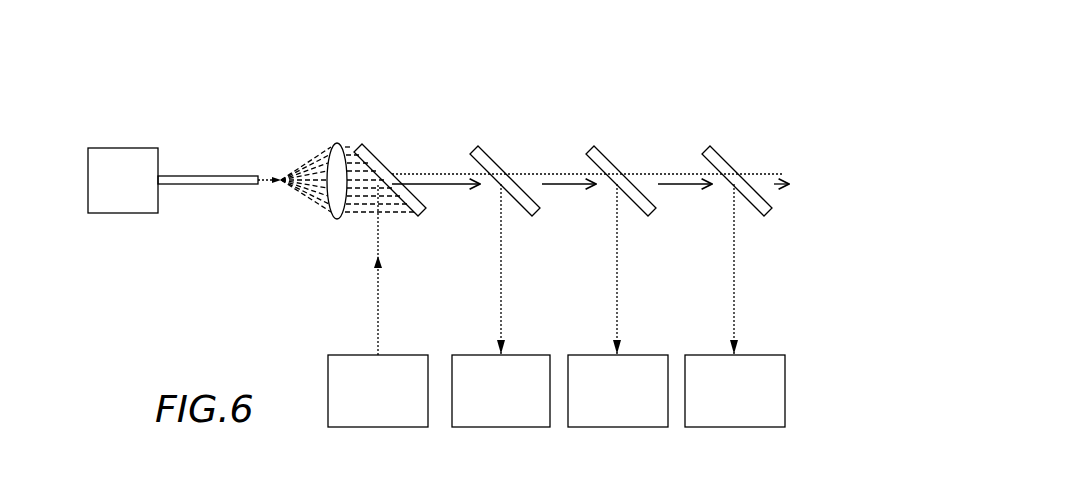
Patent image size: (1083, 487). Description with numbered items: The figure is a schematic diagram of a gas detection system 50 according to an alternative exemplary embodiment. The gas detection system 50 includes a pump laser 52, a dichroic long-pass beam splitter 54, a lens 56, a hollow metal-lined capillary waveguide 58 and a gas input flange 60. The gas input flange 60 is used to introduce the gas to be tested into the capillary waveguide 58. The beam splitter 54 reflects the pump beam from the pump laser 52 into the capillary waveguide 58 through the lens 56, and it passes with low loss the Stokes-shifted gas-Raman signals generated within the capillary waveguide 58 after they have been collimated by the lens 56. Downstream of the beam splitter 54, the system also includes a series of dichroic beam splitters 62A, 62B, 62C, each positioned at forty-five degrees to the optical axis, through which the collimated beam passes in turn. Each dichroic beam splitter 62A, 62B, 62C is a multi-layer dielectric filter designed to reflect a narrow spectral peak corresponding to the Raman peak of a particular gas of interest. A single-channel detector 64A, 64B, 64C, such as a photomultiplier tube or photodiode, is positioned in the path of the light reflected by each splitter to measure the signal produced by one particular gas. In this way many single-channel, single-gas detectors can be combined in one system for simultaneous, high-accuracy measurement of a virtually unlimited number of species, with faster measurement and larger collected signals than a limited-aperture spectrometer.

The gas detection system 50 is at (558, 82).
The pump laser 52 is at (400, 355).
The dichroic long-pass beam splitter 54 is at (392, 164).
The lens 56 is at (335, 143).
The hollow metal-lined capillary waveguide 58 is at (200, 176).
The gas input flange 60 is at (125, 148).
The dichroic beam splitter 62A is at (498, 164).
The dichroic beam splitter 62B is at (618, 164).
The dichroic beam splitter 62C is at (740, 165).
The single-channel detector 64A is at (522, 355).
The single-channel detector 64B is at (652, 355).
The single-channel detector 64C is at (760, 355).